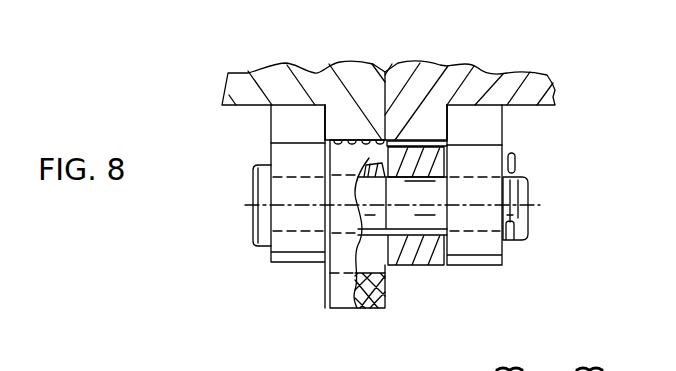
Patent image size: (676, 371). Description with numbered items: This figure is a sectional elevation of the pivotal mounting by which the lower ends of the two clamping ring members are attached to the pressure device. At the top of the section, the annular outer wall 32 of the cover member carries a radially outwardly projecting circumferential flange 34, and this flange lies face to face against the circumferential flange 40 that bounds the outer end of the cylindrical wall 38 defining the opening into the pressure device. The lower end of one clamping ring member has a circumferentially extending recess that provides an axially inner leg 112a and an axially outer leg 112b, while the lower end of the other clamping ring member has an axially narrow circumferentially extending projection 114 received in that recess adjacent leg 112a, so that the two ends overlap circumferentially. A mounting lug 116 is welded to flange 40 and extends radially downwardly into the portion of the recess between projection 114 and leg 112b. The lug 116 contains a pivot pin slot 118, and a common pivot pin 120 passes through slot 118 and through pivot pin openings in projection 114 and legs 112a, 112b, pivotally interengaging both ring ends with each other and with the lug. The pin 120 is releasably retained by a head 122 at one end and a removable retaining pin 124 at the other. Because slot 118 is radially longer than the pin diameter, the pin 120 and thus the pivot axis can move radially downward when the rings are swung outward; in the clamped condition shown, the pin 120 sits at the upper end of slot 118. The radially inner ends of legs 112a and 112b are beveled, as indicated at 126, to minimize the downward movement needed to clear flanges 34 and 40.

The annular outer wall 32 is at (505, 83).
The circumferential flange 34 is at (423, 120).
The cylindrical wall 38 is at (263, 80).
The circumferential flange 40 is at (353, 120).
The axially inner leg 112a is at (490, 250).
The axially outer leg 112b is at (285, 252).
The projection 114 is at (423, 240).
The mounting lug 116 is at (342, 295).
The pivot pin slot 118 is at (367, 309).
The pivot pin 120 is at (430, 225).
The head 122 is at (255, 233).
The retaining pin 124 is at (515, 165).
The bevel 126 is at (283, 125).